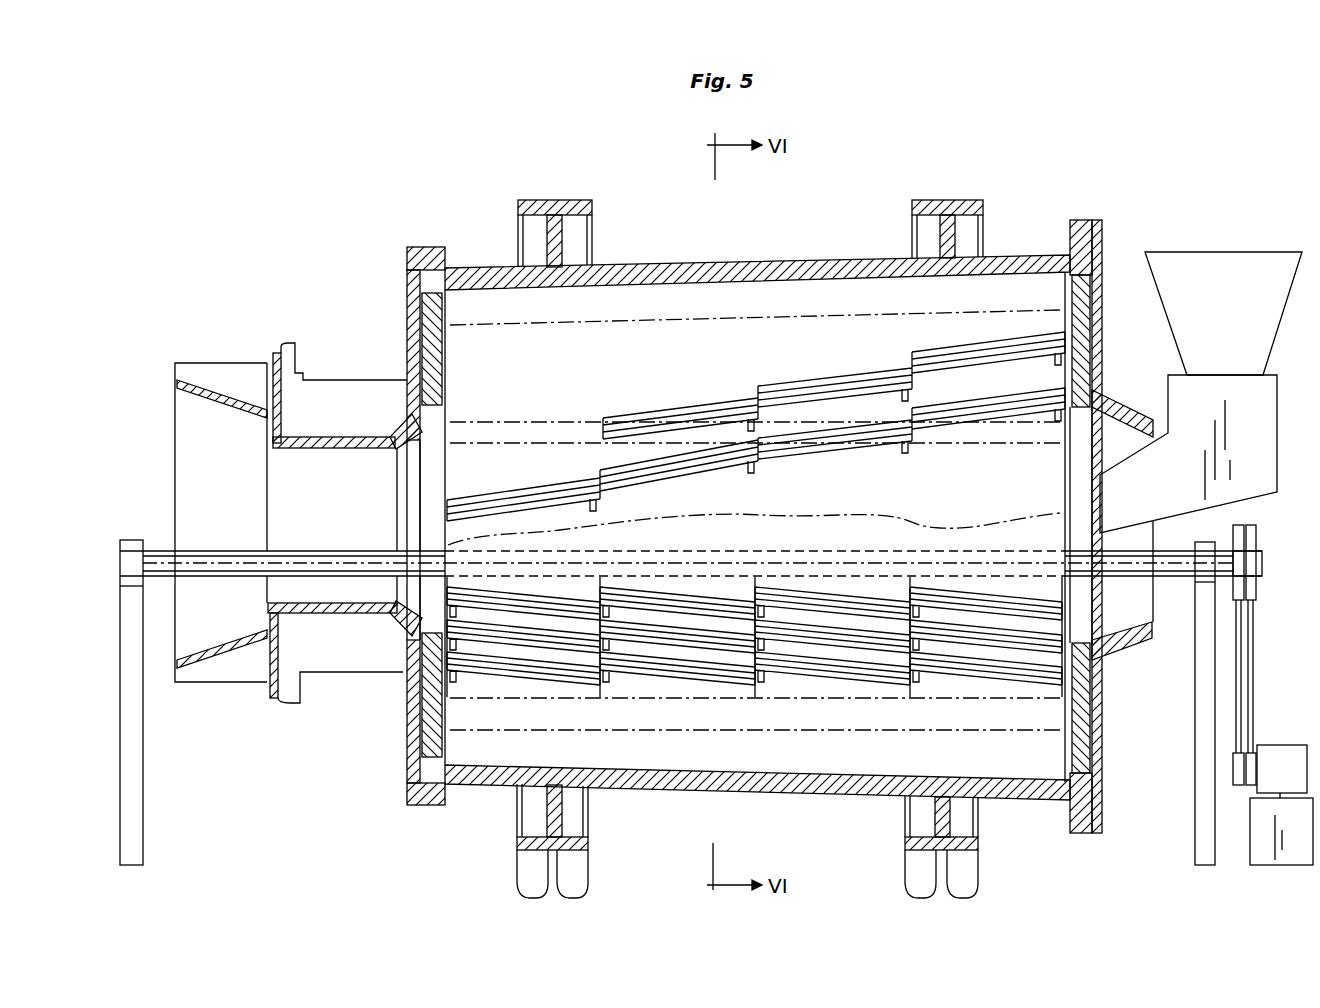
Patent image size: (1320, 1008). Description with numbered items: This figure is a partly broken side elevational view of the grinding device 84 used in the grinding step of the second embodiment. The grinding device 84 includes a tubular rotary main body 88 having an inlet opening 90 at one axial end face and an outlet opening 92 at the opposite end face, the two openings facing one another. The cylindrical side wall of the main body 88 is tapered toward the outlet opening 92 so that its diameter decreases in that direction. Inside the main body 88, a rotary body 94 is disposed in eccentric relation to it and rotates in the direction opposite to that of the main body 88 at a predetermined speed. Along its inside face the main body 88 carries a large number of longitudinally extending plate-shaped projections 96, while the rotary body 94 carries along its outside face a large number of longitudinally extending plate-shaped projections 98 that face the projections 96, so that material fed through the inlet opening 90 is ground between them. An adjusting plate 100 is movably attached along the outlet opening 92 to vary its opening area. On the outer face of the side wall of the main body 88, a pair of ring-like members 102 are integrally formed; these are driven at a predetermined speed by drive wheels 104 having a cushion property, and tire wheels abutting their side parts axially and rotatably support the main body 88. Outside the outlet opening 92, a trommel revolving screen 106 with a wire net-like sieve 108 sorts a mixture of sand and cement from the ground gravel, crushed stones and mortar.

The grinding device 84 is at (1143, 176).
The tubular rotary main body 88 is at (790, 252).
The inlet opening 90 is at (1224, 250).
The outlet opening 92 is at (400, 615).
The rotary body 94 is at (492, 686).
The plate-shaped projections 96 is at (912, 360).
The plate-shaped projections 98 is at (573, 682).
The adjusting plate 100 is at (397, 455).
The ring-like members 102 is at (552, 200).
The drive wheels 104 is at (578, 870).
The trommel revolving screen 106 is at (238, 696).
The wire net-like sieve 108 is at (198, 668).